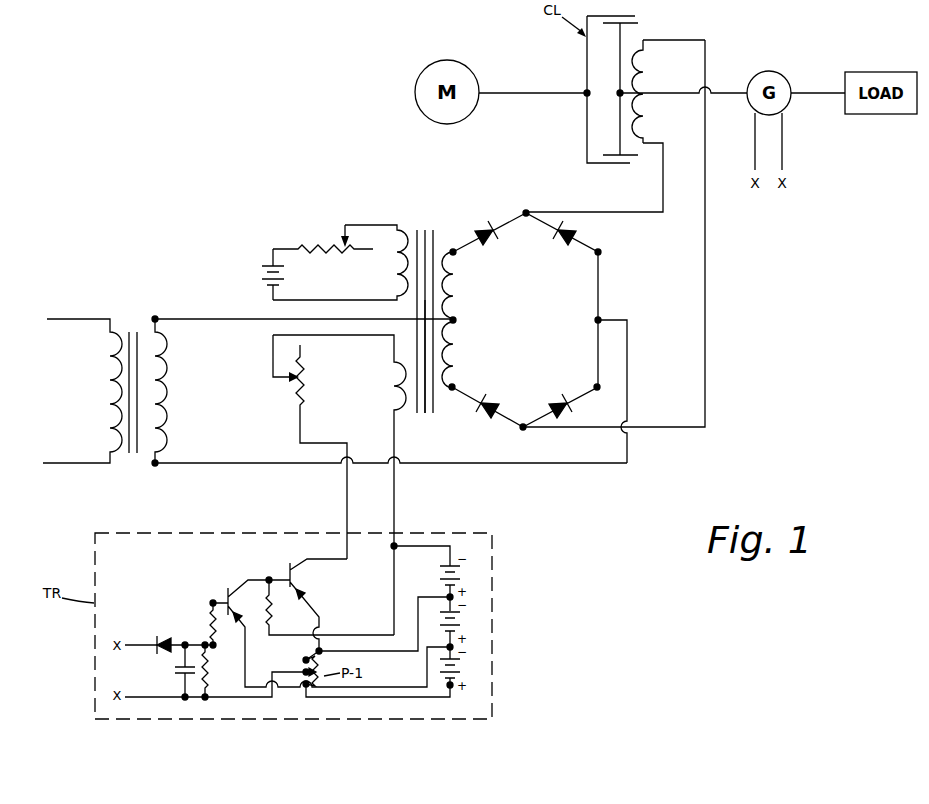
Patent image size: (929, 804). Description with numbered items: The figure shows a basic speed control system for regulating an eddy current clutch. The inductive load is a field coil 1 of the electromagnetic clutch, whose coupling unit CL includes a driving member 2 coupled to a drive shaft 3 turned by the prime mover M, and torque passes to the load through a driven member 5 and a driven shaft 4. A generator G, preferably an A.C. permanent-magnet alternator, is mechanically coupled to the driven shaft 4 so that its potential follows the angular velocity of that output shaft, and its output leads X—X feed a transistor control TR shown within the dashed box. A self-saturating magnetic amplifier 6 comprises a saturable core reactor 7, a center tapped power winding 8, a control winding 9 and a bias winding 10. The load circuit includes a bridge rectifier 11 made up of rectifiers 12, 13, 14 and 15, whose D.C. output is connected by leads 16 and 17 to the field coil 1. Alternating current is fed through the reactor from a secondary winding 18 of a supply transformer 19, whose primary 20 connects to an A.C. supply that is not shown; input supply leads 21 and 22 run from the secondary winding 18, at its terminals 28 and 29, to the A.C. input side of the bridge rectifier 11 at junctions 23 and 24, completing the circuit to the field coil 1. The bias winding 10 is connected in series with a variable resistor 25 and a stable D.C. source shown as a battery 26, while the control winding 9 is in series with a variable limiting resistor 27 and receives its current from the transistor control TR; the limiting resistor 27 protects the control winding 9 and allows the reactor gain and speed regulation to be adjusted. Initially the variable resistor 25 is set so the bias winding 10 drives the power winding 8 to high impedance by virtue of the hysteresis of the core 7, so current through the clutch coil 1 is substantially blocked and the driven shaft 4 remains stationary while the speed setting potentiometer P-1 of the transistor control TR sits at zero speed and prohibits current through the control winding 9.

The field coil 1 is at (646, 118).
The driving member 2 is at (603, 164).
The drive shaft 3 is at (527, 92).
The driven shaft 4 is at (675, 92).
The driven member 5 is at (626, 23).
The magnetic amplifier 6 is at (427, 218).
The saturable core reactor 7 is at (423, 414).
The center tapped power winding 8 is at (457, 297).
The control winding 9 is at (388, 378).
The bias winding 10 is at (395, 272).
The bridge rectifier 11 is at (525, 320).
The rectifier 12 is at (488, 243).
The rectifier 13 is at (568, 242).
The rectifier 14 is at (492, 404).
The rectifier 15 is at (551, 400).
The lead 16 is at (663, 180).
The lead 17 is at (707, 187).
The secondary winding 18 is at (168, 418).
The supply transformer 19 is at (123, 366).
The primary 20 is at (108, 412).
The input supply lead 21 is at (212, 317).
The input supply lead 22 is at (247, 466).
The junction 23 is at (466, 320).
The junction 24 is at (601, 318).
The variable resistor 25 is at (353, 254).
The battery 26 is at (288, 279).
The variable limiting resistor 27 is at (305, 380).
The secondary winding terminal 28 is at (155, 316).
The secondary winding terminal 29 is at (155, 465).